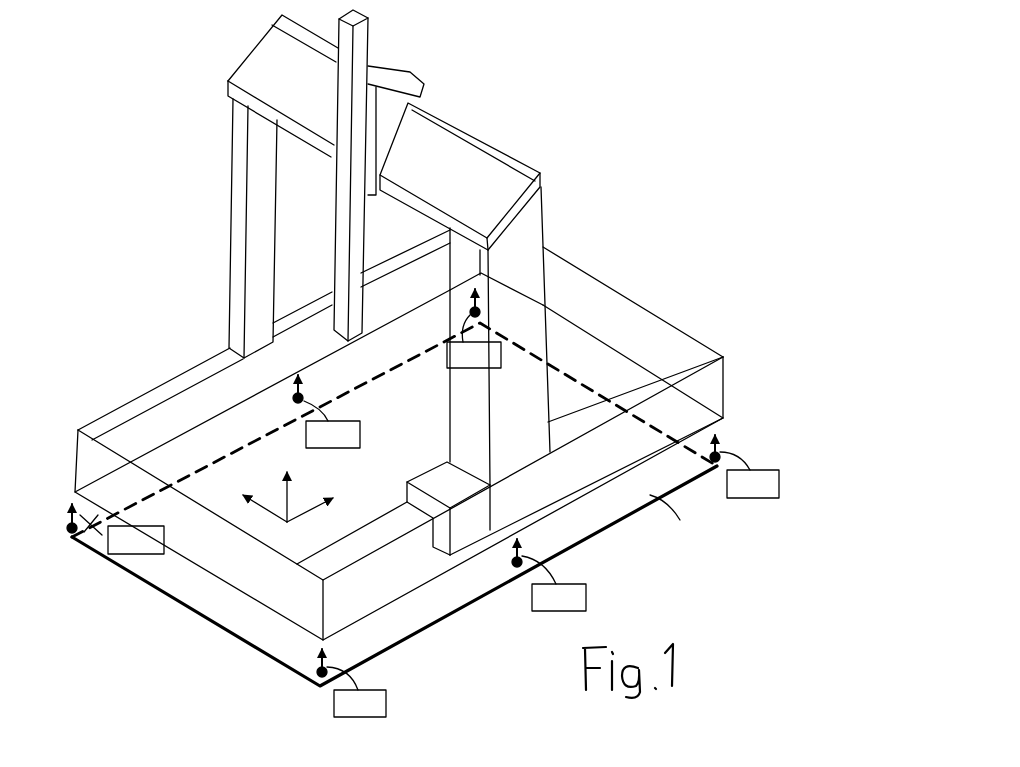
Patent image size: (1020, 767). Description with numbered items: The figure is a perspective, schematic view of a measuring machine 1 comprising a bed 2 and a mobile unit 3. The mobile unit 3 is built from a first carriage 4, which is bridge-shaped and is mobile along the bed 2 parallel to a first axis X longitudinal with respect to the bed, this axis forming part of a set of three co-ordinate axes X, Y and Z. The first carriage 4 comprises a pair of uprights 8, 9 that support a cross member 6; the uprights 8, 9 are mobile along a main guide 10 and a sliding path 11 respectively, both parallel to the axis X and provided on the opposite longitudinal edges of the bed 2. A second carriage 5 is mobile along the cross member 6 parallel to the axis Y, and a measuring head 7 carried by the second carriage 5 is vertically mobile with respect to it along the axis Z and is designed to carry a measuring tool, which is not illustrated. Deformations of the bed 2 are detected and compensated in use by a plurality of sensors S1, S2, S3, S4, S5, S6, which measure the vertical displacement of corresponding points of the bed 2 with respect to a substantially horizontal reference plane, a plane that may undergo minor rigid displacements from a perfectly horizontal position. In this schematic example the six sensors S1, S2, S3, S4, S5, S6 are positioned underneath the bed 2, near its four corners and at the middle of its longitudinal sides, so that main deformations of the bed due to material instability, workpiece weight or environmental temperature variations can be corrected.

The measuring machine 1 is at (423, 418).
The bed 2 is at (648, 333).
The mobile unit 3 is at (558, 192).
The first carriage 4 is at (550, 301).
The second carriage 5 is at (397, 100).
The cross member 6 is at (453, 163).
The measuring head 7 is at (337, 230).
The upright 8 is at (540, 348).
The upright 9 is at (248, 173).
The main guide 10 is at (690, 355).
The sliding path 11 is at (138, 408).
The sensor S1 is at (744, 466).
The sensor S2 is at (549, 575).
The sensor S3 is at (351, 683).
The sensor S4 is at (474, 328).
The sensor S5 is at (326, 411).
The sensor S6 is at (115, 529).